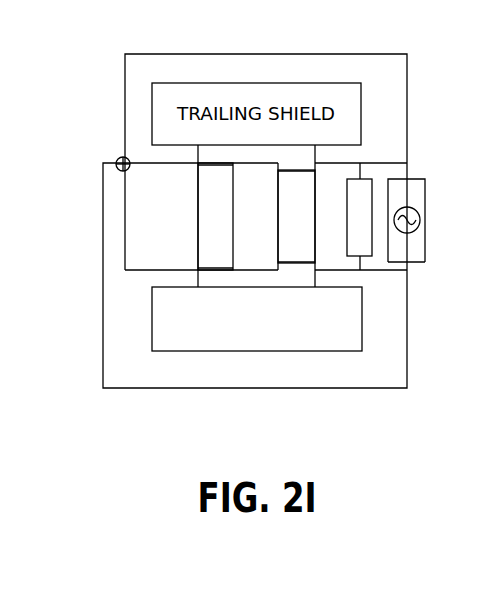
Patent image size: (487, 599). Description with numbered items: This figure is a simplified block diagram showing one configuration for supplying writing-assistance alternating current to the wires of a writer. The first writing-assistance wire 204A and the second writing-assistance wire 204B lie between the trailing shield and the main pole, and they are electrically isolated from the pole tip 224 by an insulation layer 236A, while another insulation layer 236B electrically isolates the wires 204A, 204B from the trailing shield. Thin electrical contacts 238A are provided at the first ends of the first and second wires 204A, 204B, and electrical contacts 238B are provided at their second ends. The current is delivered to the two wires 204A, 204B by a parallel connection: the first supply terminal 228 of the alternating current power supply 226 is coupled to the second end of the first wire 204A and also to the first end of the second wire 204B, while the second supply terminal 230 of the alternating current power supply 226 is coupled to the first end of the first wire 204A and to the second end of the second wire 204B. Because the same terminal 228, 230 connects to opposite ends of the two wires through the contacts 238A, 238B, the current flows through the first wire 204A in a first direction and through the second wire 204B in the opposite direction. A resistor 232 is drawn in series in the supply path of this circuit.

The pole tip 224 is at (160, 314).
The insulation layer 236B is at (203, 153).
The insulation layer 236A is at (203, 280).
The first writing-assistance wire 204A is at (200, 245).
The second writing-assistance wire 204B is at (308, 198).
The electrical contacts 238B is at (210, 166).
The electrical contacts 238A is at (210, 270).
The resistor 232 is at (362, 258).
The second supply terminal 230 is at (410, 193).
The first supply terminal 228 is at (412, 258).
The alternating current power supply 226 is at (421, 218).